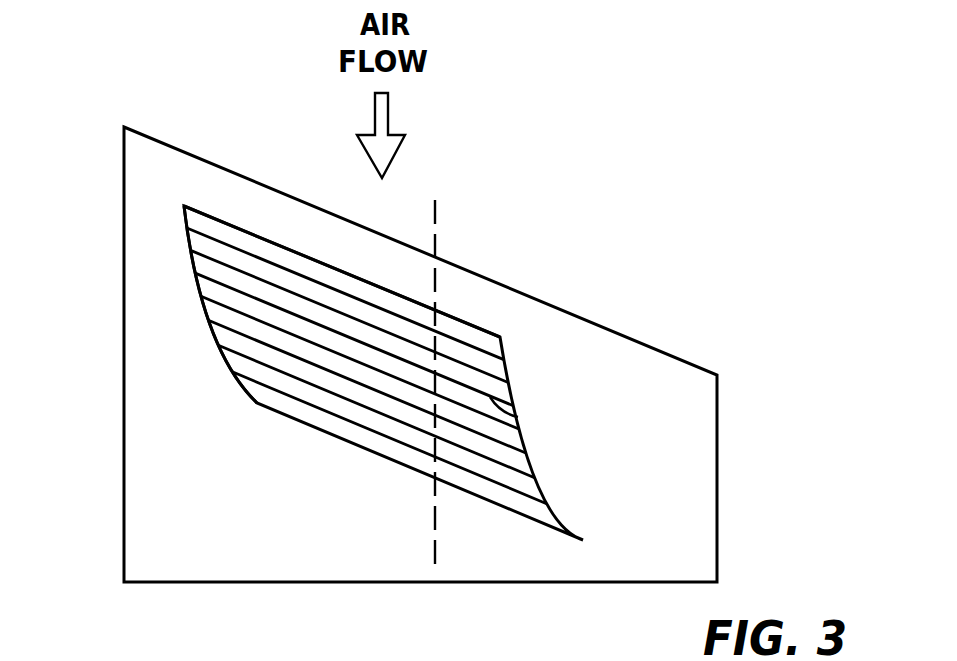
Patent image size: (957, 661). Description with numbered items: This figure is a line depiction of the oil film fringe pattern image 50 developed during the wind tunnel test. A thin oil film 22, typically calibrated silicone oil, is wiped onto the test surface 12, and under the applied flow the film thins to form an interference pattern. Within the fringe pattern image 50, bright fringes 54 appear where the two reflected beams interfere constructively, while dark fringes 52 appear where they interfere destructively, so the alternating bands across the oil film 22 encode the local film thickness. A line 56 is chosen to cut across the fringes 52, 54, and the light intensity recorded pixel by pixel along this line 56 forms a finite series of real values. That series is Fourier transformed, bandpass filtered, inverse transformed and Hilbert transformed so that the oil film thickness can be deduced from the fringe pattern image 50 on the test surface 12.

The test surface 12 is at (657, 517).
The oil film 22 is at (247, 229).
The oil film fringe pattern image 50 is at (525, 367).
The dark fringes 52 is at (520, 493).
The bright fringes 54 is at (237, 367).
The line 56 is at (437, 247).